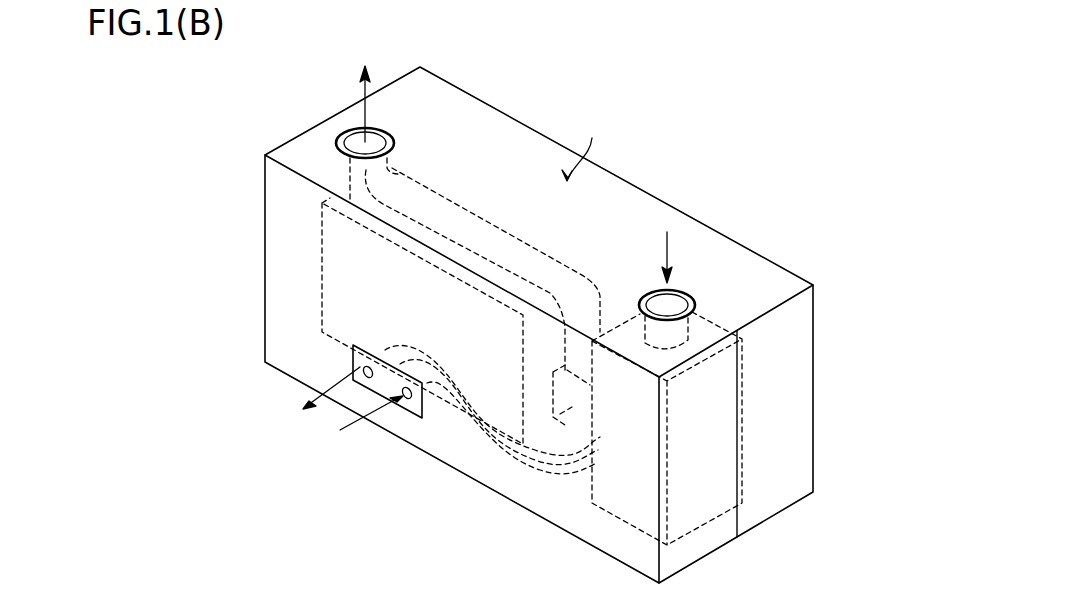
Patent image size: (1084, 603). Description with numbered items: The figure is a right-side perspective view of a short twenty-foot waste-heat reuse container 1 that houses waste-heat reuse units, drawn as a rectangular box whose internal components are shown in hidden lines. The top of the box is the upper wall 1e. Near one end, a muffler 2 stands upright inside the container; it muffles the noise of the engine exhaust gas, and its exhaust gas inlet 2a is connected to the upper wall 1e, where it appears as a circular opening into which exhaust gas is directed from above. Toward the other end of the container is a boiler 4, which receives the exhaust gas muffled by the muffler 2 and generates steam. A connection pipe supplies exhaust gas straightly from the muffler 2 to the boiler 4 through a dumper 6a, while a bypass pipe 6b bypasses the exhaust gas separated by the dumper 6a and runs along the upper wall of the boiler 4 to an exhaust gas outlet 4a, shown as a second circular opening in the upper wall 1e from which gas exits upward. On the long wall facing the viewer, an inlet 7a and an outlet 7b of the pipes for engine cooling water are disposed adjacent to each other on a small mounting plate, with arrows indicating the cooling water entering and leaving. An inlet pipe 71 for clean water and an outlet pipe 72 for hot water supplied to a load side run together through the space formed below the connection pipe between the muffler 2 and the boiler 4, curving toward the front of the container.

The 20-f container 1 is at (660, 83).
The upper wall 1e is at (584, 148).
The muffler 2 is at (697, 492).
The exhaust gas inlet 2a is at (690, 297).
The boiler 4 is at (340, 276).
The exhaust gas outlet 4a is at (342, 134).
The dumper 6a is at (557, 413).
The bypass pipe 6b is at (487, 222).
The inlet 7a is at (407, 400).
The outlet 7b is at (355, 367).
The inlet pipe 71 is at (507, 457).
The outlet pipe 72 is at (468, 440).